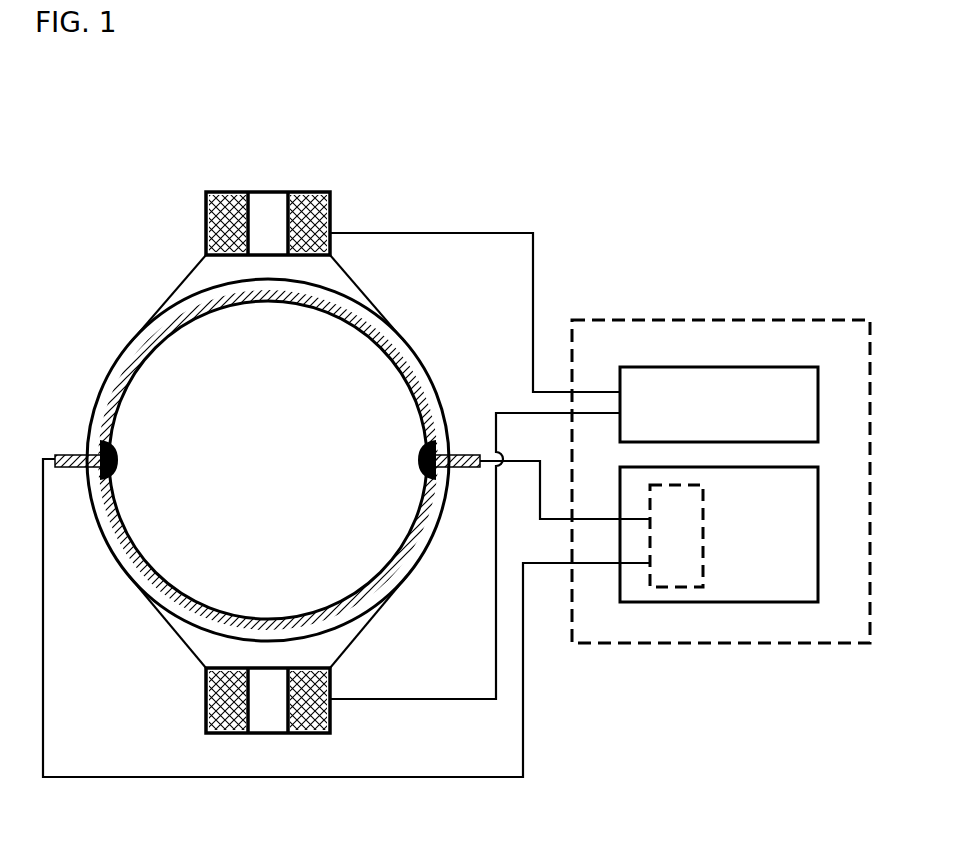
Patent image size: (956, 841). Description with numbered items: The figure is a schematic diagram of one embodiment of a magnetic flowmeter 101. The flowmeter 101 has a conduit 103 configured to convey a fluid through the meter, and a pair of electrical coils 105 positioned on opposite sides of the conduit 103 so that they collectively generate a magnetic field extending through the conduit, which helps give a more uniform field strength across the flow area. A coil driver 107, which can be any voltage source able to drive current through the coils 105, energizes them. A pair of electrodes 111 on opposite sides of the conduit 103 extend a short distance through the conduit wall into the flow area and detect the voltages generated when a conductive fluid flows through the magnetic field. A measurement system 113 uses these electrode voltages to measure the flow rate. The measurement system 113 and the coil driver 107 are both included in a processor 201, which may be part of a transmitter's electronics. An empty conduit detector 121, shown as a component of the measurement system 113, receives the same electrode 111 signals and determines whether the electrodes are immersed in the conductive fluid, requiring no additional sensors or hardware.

The magnetic flowmeter 101 is at (194, 140).
The conduit 103 is at (125, 347).
The electrical coil 105 is at (331, 222).
The coil driver 107 is at (737, 417).
The electrode 111 is at (113, 450).
The measurement system 113 is at (770, 550).
The empty conduit detector 121 is at (694, 550).
The processor 201 is at (826, 316).